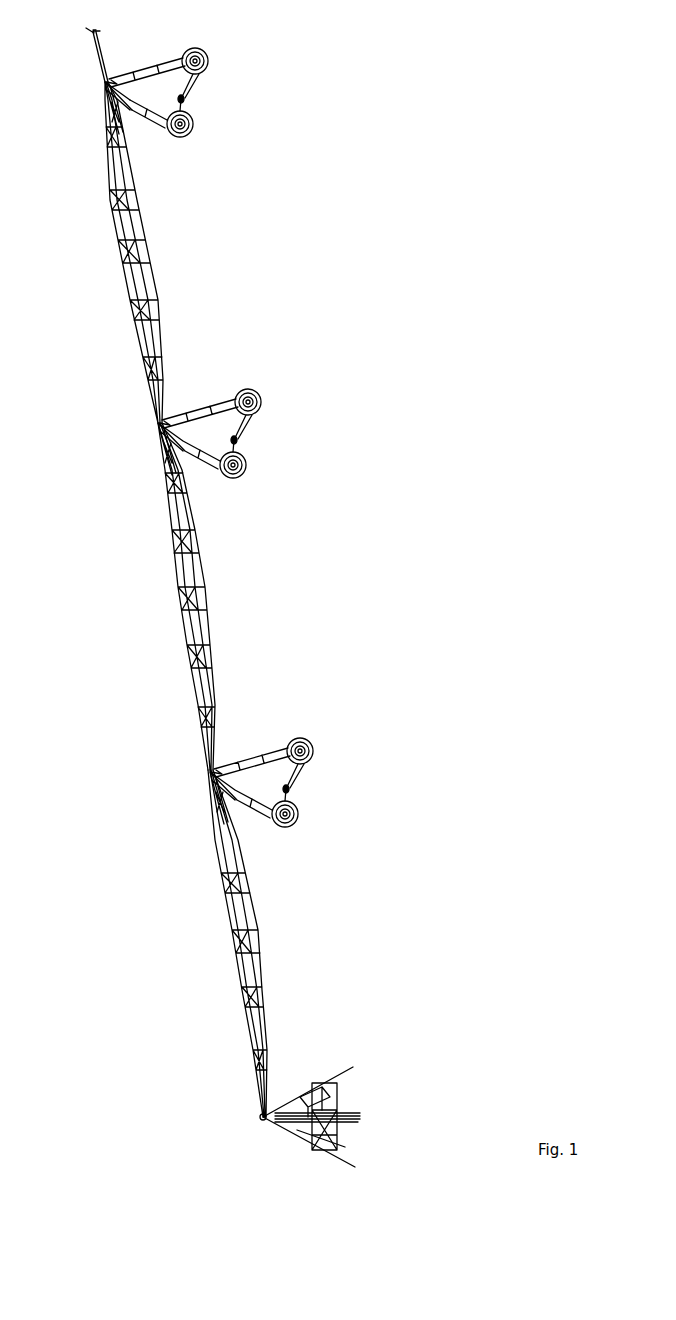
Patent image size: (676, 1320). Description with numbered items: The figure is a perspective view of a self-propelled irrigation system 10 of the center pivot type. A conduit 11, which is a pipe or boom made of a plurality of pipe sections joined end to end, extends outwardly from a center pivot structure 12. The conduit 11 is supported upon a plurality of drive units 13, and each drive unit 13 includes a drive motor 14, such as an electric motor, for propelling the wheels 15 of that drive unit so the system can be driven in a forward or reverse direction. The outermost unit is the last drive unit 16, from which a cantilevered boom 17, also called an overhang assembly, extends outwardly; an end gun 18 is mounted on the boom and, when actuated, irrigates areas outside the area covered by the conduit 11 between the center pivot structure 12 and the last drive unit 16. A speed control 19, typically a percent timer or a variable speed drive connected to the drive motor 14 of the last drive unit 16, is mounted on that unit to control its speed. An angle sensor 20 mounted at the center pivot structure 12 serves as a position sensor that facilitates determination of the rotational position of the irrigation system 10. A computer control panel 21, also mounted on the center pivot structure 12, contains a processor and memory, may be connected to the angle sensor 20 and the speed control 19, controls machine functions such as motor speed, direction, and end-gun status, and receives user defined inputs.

The irrigation system 10 is at (160, 650).
The conduit 11 is at (227, 947).
The center pivot structure 12 is at (325, 1088).
The drive unit 13 is at (263, 760).
The drive motor 14 is at (290, 790).
The wheels 15 is at (298, 733).
The last drive unit 16 is at (154, 118).
The cantilevered boom 17 is at (95, 56).
The end gun 18 is at (88, 30).
The speed control 19 is at (103, 84).
The angle sensor 20 is at (258, 1118).
The computer control panel 21 is at (320, 1097).